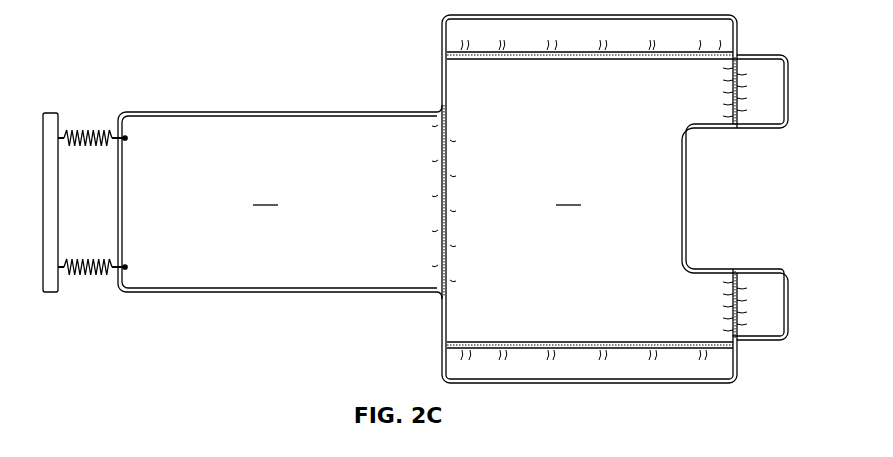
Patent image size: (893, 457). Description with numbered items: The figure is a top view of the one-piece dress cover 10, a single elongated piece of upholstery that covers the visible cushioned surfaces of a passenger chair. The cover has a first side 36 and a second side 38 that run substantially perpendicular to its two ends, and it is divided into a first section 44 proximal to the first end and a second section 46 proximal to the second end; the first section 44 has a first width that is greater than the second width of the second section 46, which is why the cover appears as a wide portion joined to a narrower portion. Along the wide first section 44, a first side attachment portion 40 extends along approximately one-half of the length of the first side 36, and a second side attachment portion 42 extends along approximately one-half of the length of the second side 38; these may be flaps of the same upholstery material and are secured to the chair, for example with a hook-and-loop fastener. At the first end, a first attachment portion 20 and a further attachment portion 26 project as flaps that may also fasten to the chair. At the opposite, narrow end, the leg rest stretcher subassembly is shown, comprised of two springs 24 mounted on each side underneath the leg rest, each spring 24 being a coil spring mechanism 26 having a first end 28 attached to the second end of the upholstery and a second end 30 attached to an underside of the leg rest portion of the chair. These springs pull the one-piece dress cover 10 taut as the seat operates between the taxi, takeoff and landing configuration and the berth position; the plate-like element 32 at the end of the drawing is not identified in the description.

The one-piece dress cover 10 is at (421, 207).
The first attachment portion 20 is at (768, 97).
The spring 24 is at (88, 132).
The spring mechanism 26 is at (766, 304).
The first end of the spring mechanism 28 is at (126, 136).
The second end of the spring mechanism 30 is at (63, 132).
The plate 32 is at (42, 210).
The first side 36 is at (281, 110).
The second side 38 is at (280, 294).
The first side attachment portion 40 is at (577, 36).
The second side attachment portion 42 is at (600, 368).
The first section 44 is at (610, 199).
The second section 46 is at (280, 204).